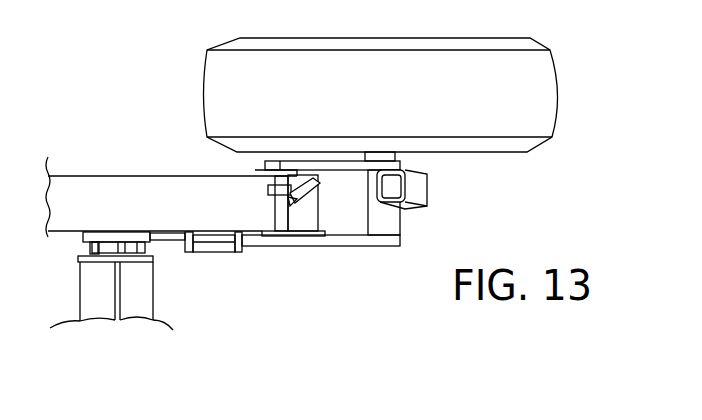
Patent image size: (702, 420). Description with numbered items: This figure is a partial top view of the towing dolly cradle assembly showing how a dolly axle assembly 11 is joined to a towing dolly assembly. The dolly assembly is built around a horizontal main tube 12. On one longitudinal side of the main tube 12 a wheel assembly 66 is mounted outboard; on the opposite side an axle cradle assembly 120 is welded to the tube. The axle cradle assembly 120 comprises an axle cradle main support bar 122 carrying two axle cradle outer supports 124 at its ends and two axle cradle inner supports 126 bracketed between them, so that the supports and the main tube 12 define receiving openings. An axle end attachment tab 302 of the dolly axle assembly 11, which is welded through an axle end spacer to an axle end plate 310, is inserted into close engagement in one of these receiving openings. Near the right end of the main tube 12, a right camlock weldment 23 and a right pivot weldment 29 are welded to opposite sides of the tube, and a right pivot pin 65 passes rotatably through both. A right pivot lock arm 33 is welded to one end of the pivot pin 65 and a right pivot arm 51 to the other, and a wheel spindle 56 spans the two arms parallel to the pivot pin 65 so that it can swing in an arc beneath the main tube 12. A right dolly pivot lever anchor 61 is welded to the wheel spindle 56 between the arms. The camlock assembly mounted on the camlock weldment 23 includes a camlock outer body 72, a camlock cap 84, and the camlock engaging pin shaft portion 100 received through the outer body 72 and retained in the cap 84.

The dolly axle assembly 11 is at (72, 297).
The main tube 12 is at (166, 214).
The right camlock weldment 23 is at (303, 237).
The right pivot weldment 29 is at (265, 163).
The right pivot lock arm 33 is at (345, 242).
The right pivot arm 51 is at (341, 161).
The wheel spindle 56 is at (383, 217).
The right dolly pivot lever anchor 61 is at (427, 188).
The right pivot pin 65 is at (274, 218).
The wheel assembly 66 is at (193, 98).
The camlock outer body 72 is at (319, 216).
The camlock cap 84 is at (312, 190).
The camlock engaging pin shaft portion 100 is at (313, 194).
The axle cradle assembly 120 is at (197, 274).
The axle cradle main support bar 122 is at (202, 253).
The axle cradle outer support 124 is at (90, 247).
The axle cradle inner support 126 is at (144, 248).
The axle end attachment tab 302 is at (102, 233).
The axle end plate 310 is at (78, 263).